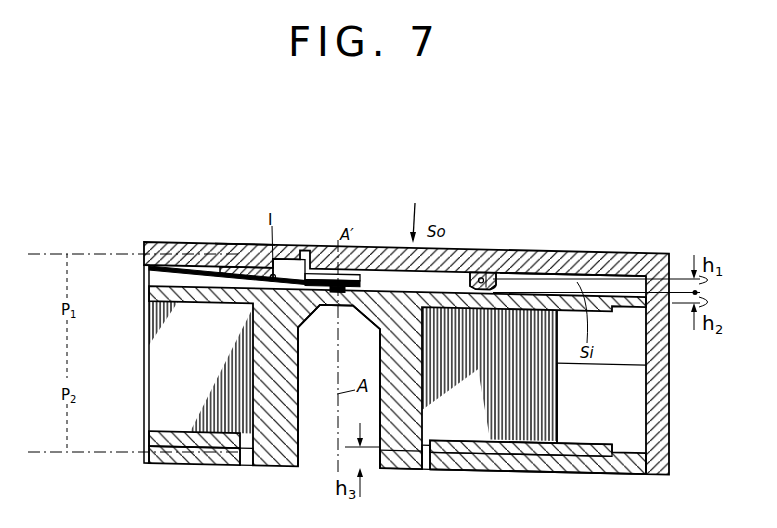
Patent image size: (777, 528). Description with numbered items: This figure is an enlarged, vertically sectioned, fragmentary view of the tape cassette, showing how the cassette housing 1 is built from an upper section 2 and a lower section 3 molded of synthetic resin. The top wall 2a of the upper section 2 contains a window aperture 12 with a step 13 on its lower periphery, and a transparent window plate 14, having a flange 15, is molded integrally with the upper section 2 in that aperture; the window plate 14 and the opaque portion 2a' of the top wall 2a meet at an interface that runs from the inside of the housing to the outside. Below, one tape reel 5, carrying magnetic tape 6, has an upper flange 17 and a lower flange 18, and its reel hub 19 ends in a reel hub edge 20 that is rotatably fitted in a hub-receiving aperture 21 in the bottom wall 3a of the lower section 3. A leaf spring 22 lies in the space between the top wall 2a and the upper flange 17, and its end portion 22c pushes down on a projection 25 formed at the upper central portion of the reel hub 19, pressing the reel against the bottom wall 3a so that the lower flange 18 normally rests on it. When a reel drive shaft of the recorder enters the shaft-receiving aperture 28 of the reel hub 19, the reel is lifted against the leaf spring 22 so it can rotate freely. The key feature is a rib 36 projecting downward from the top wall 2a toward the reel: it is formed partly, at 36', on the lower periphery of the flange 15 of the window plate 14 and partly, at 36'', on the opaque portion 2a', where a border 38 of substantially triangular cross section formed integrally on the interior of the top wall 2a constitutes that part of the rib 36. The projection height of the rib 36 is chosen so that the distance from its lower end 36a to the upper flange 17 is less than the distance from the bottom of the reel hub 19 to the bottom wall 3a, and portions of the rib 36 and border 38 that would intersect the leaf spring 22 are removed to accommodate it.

The cassette housing 1 is at (164, 171).
The upper section 2 is at (648, 253).
The top wall 2a is at (578, 264).
The opaque portion 2a' is at (245, 227).
The lower section 3 is at (660, 440).
The bottom wall 3a is at (607, 467).
The tape reel 5 is at (220, 445).
The magnetic tape 6 is at (188, 468).
The window aperture 12 is at (478, 272).
The step 13 is at (486, 268).
The transparent window plate 14 is at (416, 208).
The flange 15 is at (290, 260).
The upper flange 17 is at (652, 390).
The lower flange 18 is at (558, 452).
The reel hub 19 is at (273, 357).
The reel hub edge 20 is at (400, 453).
The hub-receiving aperture 21 is at (428, 468).
The leaf spring 22 is at (221, 250).
The end portion 22c is at (350, 272).
The projection 25 is at (337, 278).
The shaft-receiving aperture 28 is at (302, 440).
The rib 36 is at (495, 270).
The rib portion on window plate flange 36' is at (530, 206).
The rib portion on opaque top wall 36'' is at (553, 228).
The lower end of rib 36a is at (495, 285).
The border 38 is at (266, 268).